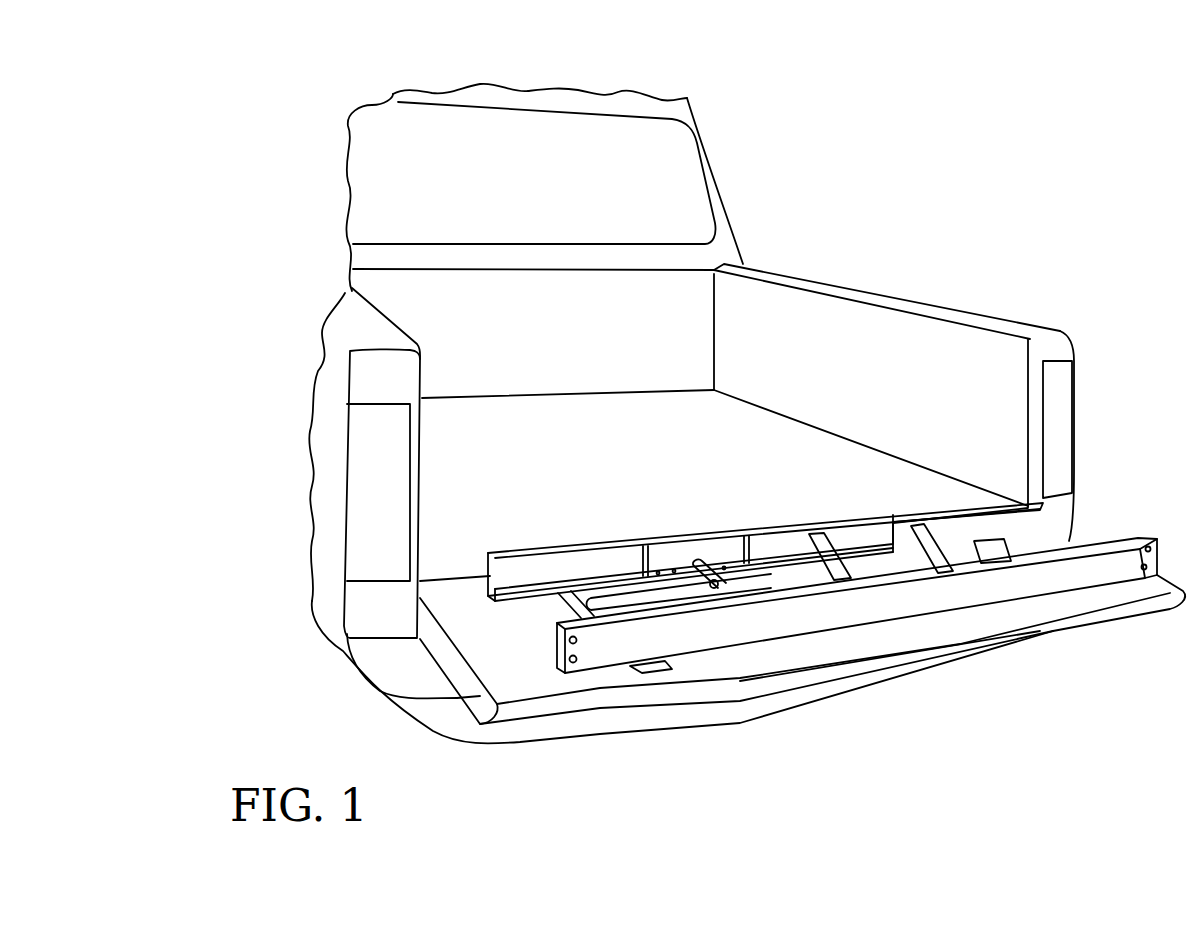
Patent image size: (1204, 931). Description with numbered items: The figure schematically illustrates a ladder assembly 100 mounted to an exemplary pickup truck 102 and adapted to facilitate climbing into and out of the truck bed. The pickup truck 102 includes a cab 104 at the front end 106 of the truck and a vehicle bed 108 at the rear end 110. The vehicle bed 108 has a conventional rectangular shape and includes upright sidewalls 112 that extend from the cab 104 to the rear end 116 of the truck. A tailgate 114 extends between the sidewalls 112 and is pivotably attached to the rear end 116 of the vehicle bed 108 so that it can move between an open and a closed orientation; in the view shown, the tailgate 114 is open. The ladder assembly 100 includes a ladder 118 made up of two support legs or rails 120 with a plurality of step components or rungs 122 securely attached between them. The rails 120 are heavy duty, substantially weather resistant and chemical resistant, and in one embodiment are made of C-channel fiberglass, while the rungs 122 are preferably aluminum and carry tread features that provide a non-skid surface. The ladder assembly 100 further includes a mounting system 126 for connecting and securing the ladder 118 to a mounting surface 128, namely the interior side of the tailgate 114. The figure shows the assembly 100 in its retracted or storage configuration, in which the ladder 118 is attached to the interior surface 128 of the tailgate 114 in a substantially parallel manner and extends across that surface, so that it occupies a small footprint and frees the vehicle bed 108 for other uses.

The ladder assembly 100 is at (708, 478).
The pickup truck 102 is at (915, 253).
The cab 104 is at (583, 134).
The front end 106 is at (780, 142).
The vehicle bed 108 is at (530, 427).
The rear end 110 is at (838, 242).
The upright sidewalls 112 is at (946, 372).
The tailgate 114 is at (877, 650).
The rear end of the vehicle bed 116 is at (718, 735).
The ladder 118 is at (990, 588).
The support legs or rails 120 is at (590, 560).
The step components or rungs 122 is at (828, 558).
The mounting system 126 is at (625, 687).
The mounting surface 128 is at (523, 675).